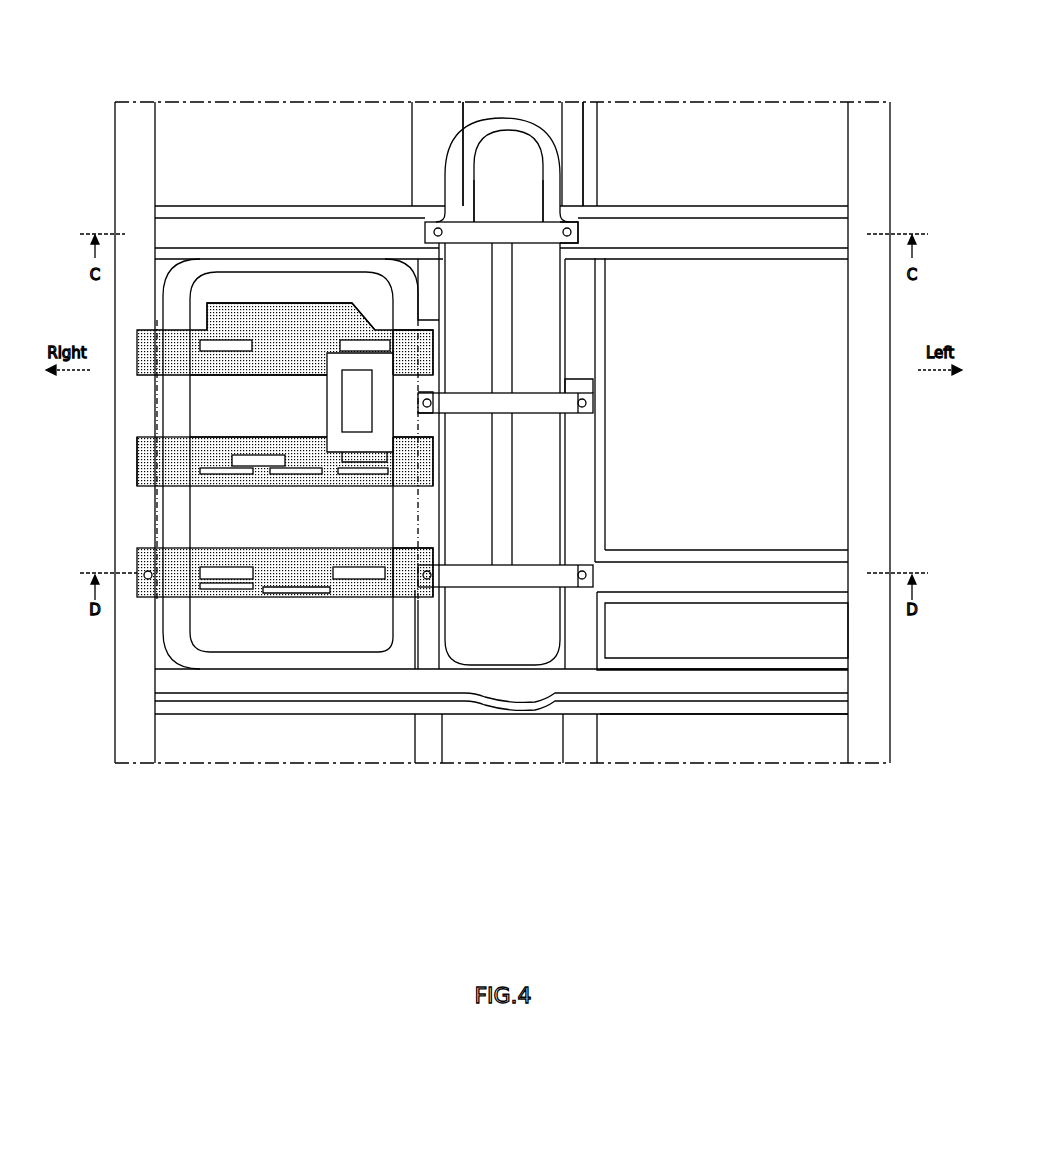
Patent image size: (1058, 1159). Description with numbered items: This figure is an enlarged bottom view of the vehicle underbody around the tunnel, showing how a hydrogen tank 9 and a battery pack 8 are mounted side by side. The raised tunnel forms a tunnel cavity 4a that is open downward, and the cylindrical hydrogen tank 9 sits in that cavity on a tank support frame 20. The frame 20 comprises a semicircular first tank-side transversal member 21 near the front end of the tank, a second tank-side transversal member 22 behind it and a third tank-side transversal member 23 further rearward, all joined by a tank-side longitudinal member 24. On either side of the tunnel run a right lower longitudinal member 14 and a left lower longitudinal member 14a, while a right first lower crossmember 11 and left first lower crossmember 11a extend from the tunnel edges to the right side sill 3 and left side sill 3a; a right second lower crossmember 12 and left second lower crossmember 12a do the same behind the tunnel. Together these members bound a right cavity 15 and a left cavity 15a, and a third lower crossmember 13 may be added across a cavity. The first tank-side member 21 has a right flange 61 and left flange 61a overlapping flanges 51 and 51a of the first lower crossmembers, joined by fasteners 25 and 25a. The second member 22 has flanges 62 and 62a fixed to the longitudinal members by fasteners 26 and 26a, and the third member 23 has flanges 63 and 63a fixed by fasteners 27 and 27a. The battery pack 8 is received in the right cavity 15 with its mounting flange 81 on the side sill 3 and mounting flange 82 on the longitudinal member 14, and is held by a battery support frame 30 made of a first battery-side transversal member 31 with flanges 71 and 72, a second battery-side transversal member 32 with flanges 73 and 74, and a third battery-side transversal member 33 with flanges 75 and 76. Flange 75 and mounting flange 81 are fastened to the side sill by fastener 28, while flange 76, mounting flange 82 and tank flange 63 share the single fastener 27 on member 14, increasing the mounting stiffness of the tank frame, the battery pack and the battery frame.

The right side sill 3 is at (130, 656).
The left side sill 3a is at (878, 400).
The tunnel cavity 4a is at (516, 100).
The battery pack 8 is at (137, 426).
The hydrogen tank 9 is at (501, 112).
The right first lower crossmember 11 is at (250, 233).
The left first lower crossmember 11a is at (783, 228).
The right second lower crossmember 12 is at (245, 683).
The left second lower crossmember 12a is at (747, 683).
The third lower crossmember 13 is at (758, 572).
The right lower longitudinal member 14 is at (383, 650).
The left lower longitudinal member 14a is at (580, 347).
The right cavity 15 is at (172, 274).
The left cavity 15a is at (820, 310).
The tank support frame 20 is at (552, 416).
The first tank-side transversal member 21 is at (535, 238).
The second tank-side transversal member 22 is at (565, 382).
The third tank-side transversal member 23 is at (528, 590).
The tank-side longitudinal member 24 is at (510, 505).
The right fastener 25 is at (496, 135).
The left fastener 25a is at (562, 224).
The right fastener 26 is at (428, 392).
The left fastener 26a is at (597, 402).
The right fastener 27 is at (423, 607).
The left fastener 27a is at (593, 580).
The fastener 28 is at (147, 572).
The battery support frame 30 is at (248, 334).
The first battery-side transversal member 31 is at (300, 312).
The second battery-side transversal member 32 is at (293, 445).
The third battery-side transversal member 33 is at (262, 560).
The flange 51 is at (458, 205).
The flange 51a is at (568, 205).
The right flange 61 is at (430, 228).
The left flange 61a is at (590, 232).
The right flange 62 is at (428, 414).
The left flange 62a is at (583, 416).
The right flange 63 is at (432, 567).
The left flange 63a is at (577, 567).
The flange 71 is at (260, 223).
The flange 72 is at (440, 344).
The flange 73 is at (148, 454).
The flange 74 is at (430, 470).
The flange 75 is at (249, 552).
The flange 76 is at (428, 546).
The mounting flange 81 is at (203, 410).
The mounting flange 82 is at (428, 312).